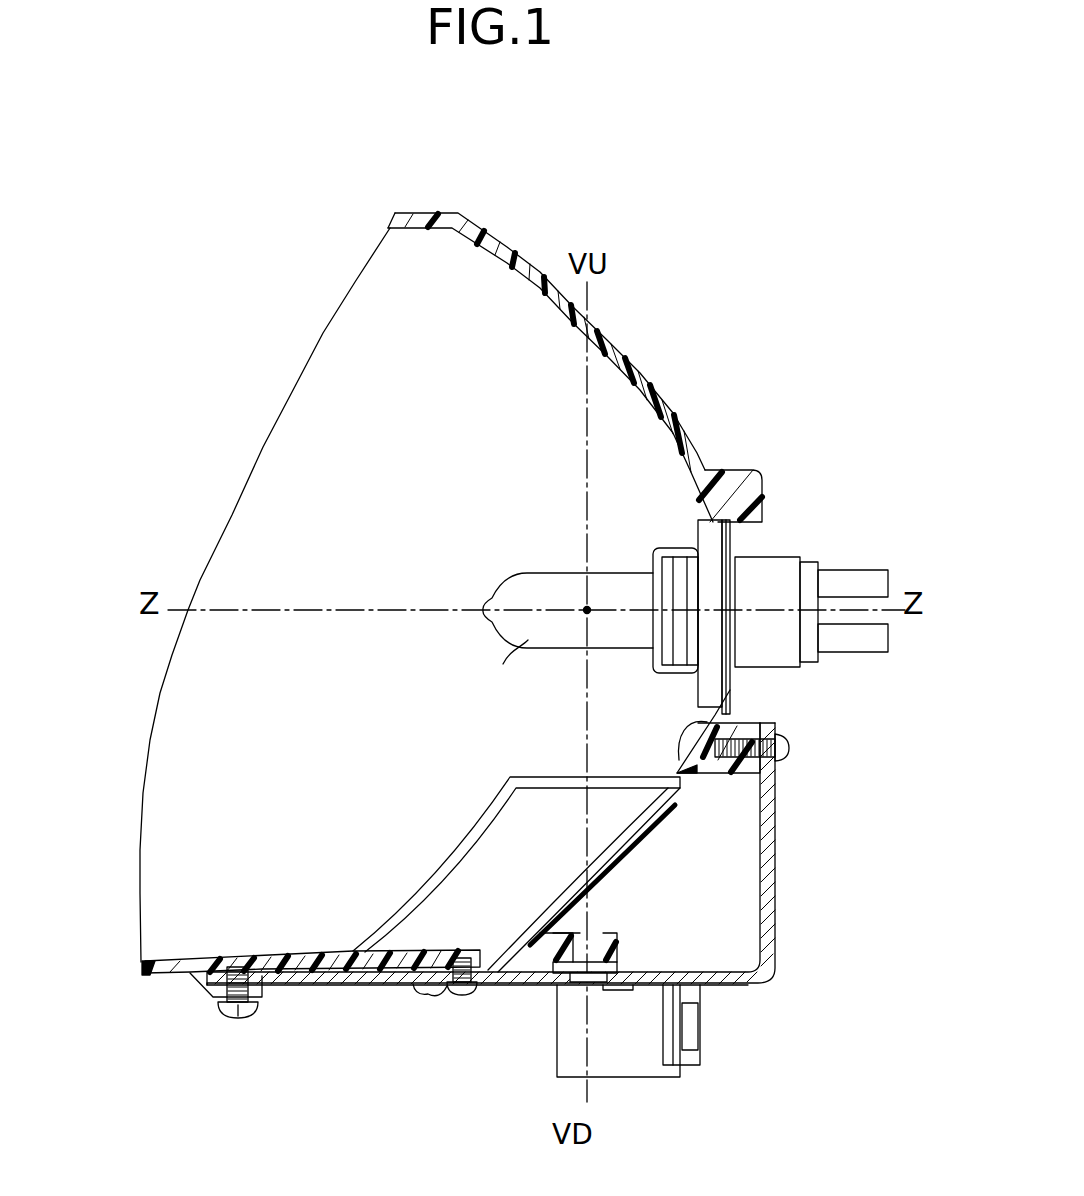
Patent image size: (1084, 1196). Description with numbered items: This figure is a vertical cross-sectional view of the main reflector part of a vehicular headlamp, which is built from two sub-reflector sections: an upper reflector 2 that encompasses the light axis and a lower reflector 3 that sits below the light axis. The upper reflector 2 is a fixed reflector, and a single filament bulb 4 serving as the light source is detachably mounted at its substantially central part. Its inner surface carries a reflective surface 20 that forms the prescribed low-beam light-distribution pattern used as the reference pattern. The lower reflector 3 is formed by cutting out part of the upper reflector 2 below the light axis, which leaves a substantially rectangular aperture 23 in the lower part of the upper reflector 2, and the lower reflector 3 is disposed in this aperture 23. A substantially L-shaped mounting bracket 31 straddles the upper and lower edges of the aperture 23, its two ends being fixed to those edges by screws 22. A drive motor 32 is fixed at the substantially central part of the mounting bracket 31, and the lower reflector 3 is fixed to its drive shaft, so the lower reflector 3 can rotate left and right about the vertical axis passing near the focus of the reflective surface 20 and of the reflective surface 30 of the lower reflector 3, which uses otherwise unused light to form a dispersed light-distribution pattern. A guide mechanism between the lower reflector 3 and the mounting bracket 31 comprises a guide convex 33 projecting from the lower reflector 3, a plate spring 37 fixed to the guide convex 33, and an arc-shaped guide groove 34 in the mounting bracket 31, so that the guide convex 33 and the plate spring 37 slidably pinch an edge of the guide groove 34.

The upper reflector 2 is at (507, 621).
The reflective surface 20 is at (546, 296).
The screws 22 is at (791, 752).
The single filament bulb 4 is at (527, 572).
The lower reflector 3 is at (545, 903).
The aperture 23 is at (438, 884).
The reflective surface 30 is at (641, 846).
The mounting bracket 31 is at (775, 903).
The drive motor 32 is at (653, 1031).
The guide convex 33 is at (424, 961).
The guide groove 34 is at (528, 986).
The plate spring 37 is at (432, 1000).